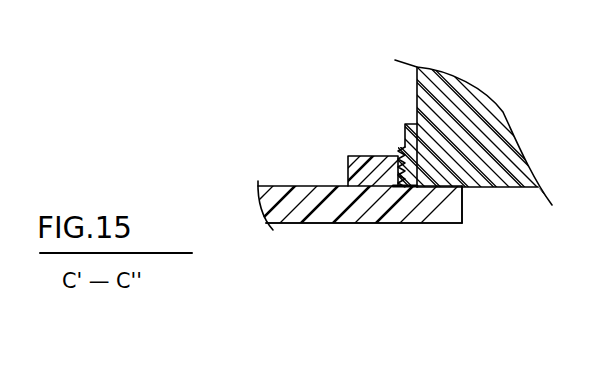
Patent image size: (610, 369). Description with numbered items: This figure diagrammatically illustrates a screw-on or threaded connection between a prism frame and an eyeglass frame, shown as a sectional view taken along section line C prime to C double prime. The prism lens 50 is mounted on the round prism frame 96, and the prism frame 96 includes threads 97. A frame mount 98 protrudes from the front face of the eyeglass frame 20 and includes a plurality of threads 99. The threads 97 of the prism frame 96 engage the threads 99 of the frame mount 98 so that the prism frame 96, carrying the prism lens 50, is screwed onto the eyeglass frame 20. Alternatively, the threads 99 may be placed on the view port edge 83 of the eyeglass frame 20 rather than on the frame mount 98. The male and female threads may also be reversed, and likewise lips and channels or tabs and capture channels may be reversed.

The eyeglass frame 20 is at (423, 222).
The prism lens 50 is at (502, 108).
The view port edge 83 is at (462, 212).
The prism frame 96 is at (403, 132).
The threads 97 is at (447, 178).
The frame mount 98 is at (345, 170).
The threads 99 is at (364, 223).